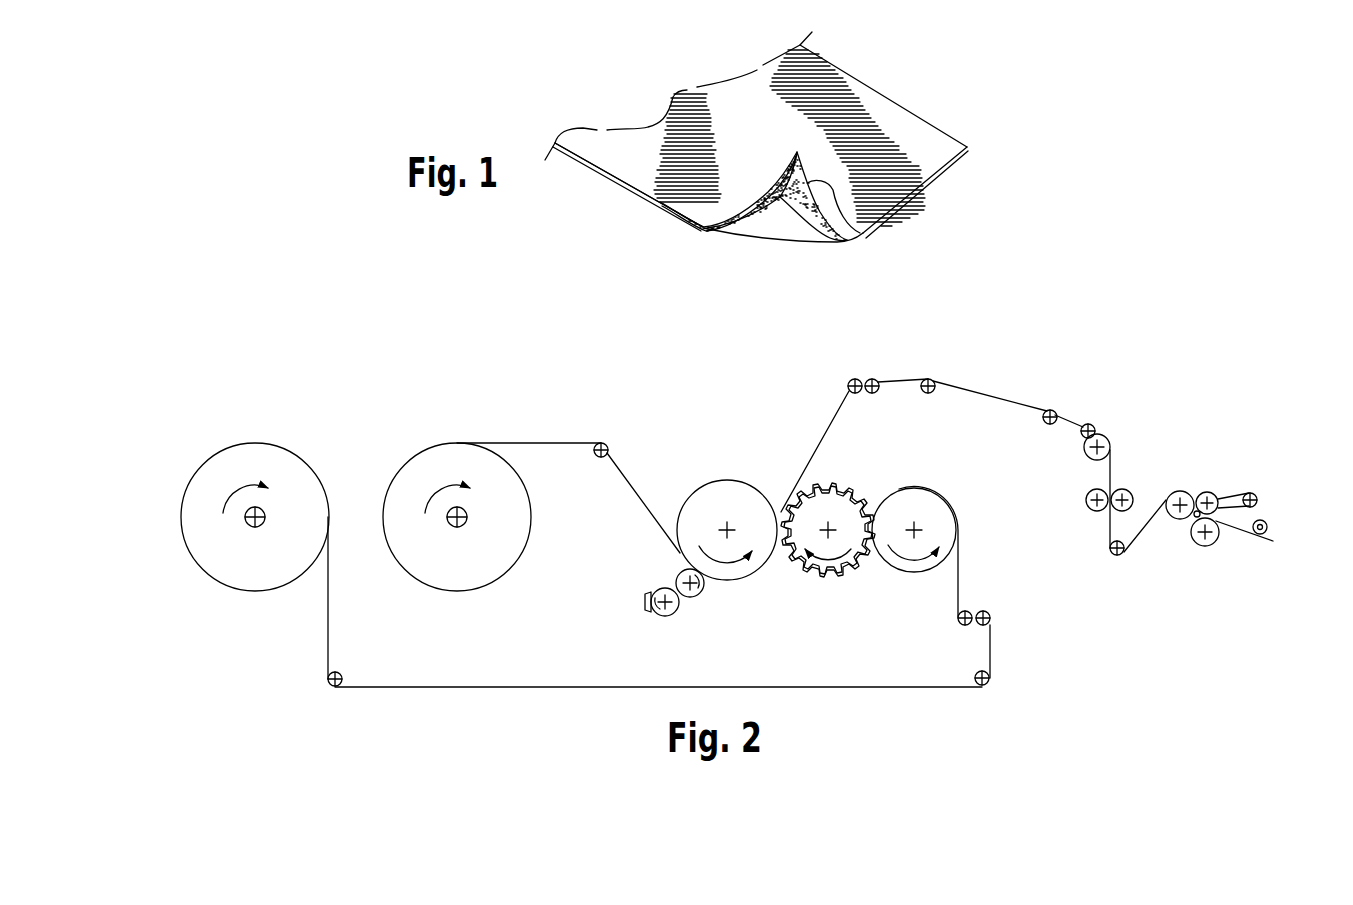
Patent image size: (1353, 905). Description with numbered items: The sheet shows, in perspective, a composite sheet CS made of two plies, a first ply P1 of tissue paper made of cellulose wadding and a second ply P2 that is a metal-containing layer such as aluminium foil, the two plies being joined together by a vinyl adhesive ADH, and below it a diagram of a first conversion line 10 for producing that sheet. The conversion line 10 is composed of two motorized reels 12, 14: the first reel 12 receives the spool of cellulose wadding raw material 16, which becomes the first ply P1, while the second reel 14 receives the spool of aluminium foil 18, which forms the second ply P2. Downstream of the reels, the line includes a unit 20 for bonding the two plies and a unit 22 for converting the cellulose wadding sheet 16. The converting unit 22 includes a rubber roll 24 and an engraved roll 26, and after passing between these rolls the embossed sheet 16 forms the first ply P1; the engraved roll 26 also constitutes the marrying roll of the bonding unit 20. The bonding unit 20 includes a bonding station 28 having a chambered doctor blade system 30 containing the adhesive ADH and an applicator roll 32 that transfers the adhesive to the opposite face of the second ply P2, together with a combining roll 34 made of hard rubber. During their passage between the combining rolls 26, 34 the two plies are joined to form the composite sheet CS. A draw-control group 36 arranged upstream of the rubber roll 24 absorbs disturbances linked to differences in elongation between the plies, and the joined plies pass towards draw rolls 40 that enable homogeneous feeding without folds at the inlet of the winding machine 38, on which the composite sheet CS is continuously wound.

In FIG. 2, the first conversion line 10 is at (262, 357).
In FIG. 2, the first reel 12 is at (300, 447).
In FIG. 2, the second reel 14 is at (418, 442).
In FIG. 2, the cellulose wadding raw material 16 is at (329, 637).
In FIG. 2, the aluminium foil 18 is at (565, 442).
In FIG. 2, the bonding unit 20 is at (727, 505).
In FIG. 2, the converting unit 22 is at (846, 484).
In FIG. 2, the rubber roll 24 is at (915, 551).
In FIG. 2, the engraved roll 26 is at (828, 530).
In FIG. 2, the bonding station 28 is at (633, 603).
In FIG. 2, the chambered doctor blade system 30 is at (680, 612).
In FIG. 2, the applicator roll 32 is at (702, 588).
In FIG. 2, the combining roll 34 is at (727, 530).
In FIG. 2, the draw-control group 36 is at (995, 603).
In FIG. 2, the winding machine 38 is at (1187, 552).
In FIG. 2, the draw rolls 40 is at (873, 370).
In FIG. 1, the composite sheet CS is at (897, 82).
In FIG. 2, the composite sheet CS is at (1020, 398).
In FIG. 1, the first ply P1 is at (627, 163).
In FIG. 1, the second ply P2 is at (758, 222).
In FIG. 1, the vinyl adhesive ADH is at (845, 215).